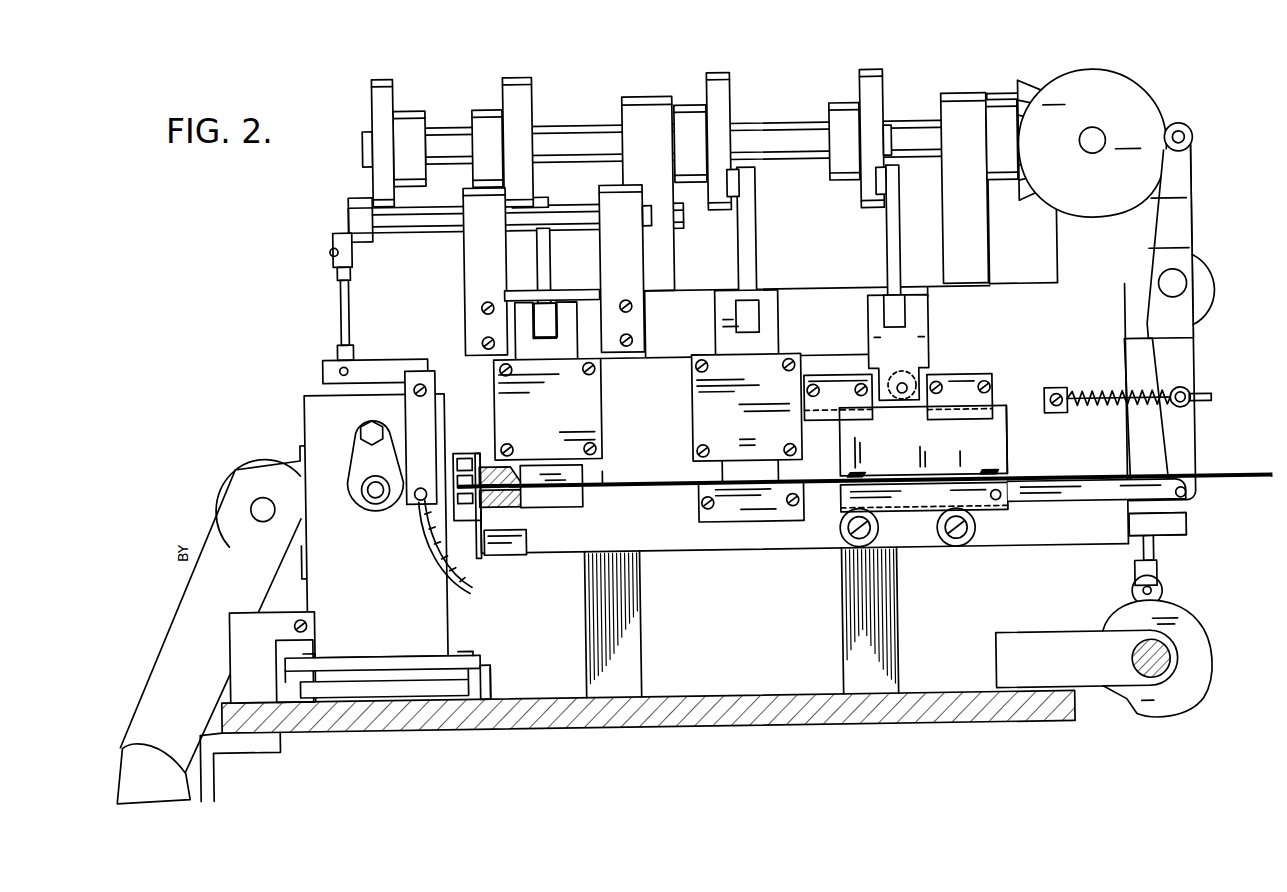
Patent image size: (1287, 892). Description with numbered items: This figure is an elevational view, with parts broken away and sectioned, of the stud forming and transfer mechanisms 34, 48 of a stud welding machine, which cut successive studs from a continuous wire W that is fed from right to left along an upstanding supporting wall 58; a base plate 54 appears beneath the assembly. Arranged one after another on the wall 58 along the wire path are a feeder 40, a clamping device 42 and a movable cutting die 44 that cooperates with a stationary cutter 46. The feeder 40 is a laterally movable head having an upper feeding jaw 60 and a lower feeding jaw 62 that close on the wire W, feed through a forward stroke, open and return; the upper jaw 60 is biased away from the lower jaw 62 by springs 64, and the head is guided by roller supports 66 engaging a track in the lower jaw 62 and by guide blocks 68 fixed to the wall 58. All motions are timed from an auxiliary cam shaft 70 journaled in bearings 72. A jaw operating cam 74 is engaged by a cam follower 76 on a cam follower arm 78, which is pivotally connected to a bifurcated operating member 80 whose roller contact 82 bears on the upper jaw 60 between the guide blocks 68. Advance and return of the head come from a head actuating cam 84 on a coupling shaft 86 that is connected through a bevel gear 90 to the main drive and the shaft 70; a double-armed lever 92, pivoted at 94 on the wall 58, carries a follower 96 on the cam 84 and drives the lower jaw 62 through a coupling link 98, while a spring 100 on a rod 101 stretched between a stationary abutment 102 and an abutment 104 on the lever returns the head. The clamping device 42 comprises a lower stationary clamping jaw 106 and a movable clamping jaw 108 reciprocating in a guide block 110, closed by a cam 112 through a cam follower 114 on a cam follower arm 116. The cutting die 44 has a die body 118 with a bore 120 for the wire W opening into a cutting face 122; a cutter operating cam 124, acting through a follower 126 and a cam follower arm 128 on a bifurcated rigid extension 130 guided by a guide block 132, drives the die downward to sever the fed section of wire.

The stud forming and transfer mechanisms 34 is at (1201, 342).
The feeder 40 is at (940, 440).
The clamping device 42 is at (733, 340).
The movable cutting die 44 is at (560, 496).
The stationary cutter 46 is at (504, 558).
The stud forming and transfer mechanisms 48 is at (445, 546).
The base plate 54 is at (637, 730).
The upstanding supporting wall 58 is at (1022, 190).
The upper feeding jaw 60 is at (1028, 439).
The lower feeding jaw 62 is at (924, 514).
The springs 64 is at (922, 459).
The roller supports 66 is at (956, 541).
The guide blocks 68 is at (902, 385).
The auxiliary cam shaft 70 is at (722, 126).
The bearings 72 is at (804, 174).
The jaw operating cam 74 is at (885, 130).
The cam follower 76 is at (902, 187).
The cam follower arm 78 is at (909, 231).
The bifurcated operating member 80 is at (916, 347).
The roller contact 82 is at (901, 404).
The head actuating cam 84 is at (1094, 141).
The coupling shaft 86 is at (1092, 126).
The bevel gear 90 is at (1040, 123).
The double-armed lever 92 is at (1187, 241).
The pivot 94 is at (1166, 289).
The follower 96 is at (1191, 120).
The coupling link 98 is at (1097, 505).
The spring 100 is at (1123, 384).
The rod 101 is at (1219, 387).
The stationary abutment 102 is at (1061, 388).
The abutment 104 is at (1200, 383).
The lower stationary clamping jaw 106 is at (751, 513).
The movable clamping jaw 108 is at (766, 322).
The guide block 110 is at (728, 407).
The cam 112 is at (736, 139).
The cam follower 114 is at (718, 205).
The cam follower arm 116 is at (763, 234).
The die body 118 is at (521, 507).
The bore 120 is at (501, 496).
The cutting face 122 is at (461, 489).
The cutter operating cam 124 is at (533, 142).
The follower 126 is at (545, 191).
The cam follower arm 128 is at (560, 283).
The bifurcated rigid extension 130 is at (559, 325).
The guide block 132 is at (565, 409).
The wire W is at (864, 469).